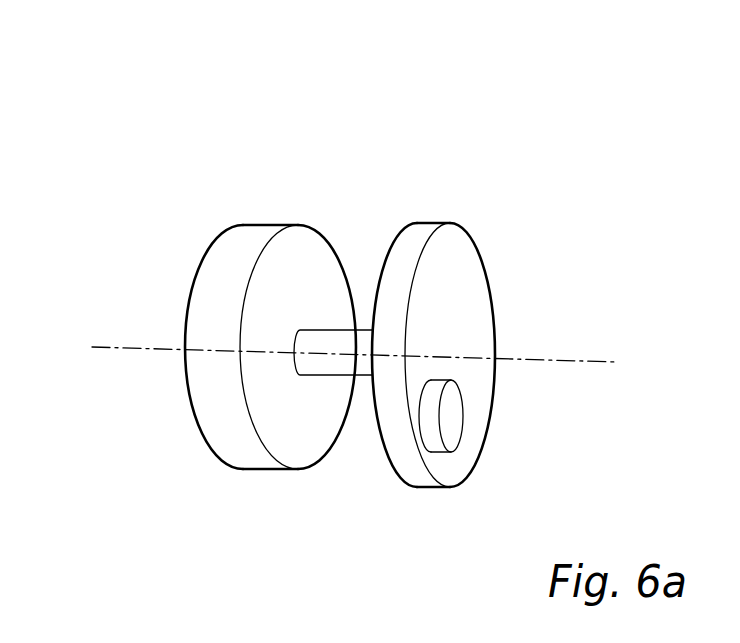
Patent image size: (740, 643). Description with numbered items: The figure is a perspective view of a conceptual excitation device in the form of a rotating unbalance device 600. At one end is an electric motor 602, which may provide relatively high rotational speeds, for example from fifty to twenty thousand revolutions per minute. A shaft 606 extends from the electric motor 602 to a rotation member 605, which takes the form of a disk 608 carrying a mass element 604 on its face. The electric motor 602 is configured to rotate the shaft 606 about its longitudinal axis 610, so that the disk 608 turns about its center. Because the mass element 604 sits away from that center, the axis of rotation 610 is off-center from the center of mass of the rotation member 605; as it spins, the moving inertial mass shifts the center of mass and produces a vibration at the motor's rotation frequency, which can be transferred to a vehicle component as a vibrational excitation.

The rotating unbalance device 600 is at (540, 103).
The electric motor 602 is at (189, 302).
The mass element 604 is at (450, 422).
The rotation member 605 is at (432, 502).
The shaft 606 is at (350, 343).
The disk 608 is at (405, 278).
The longitudinal axis 610 is at (148, 347).